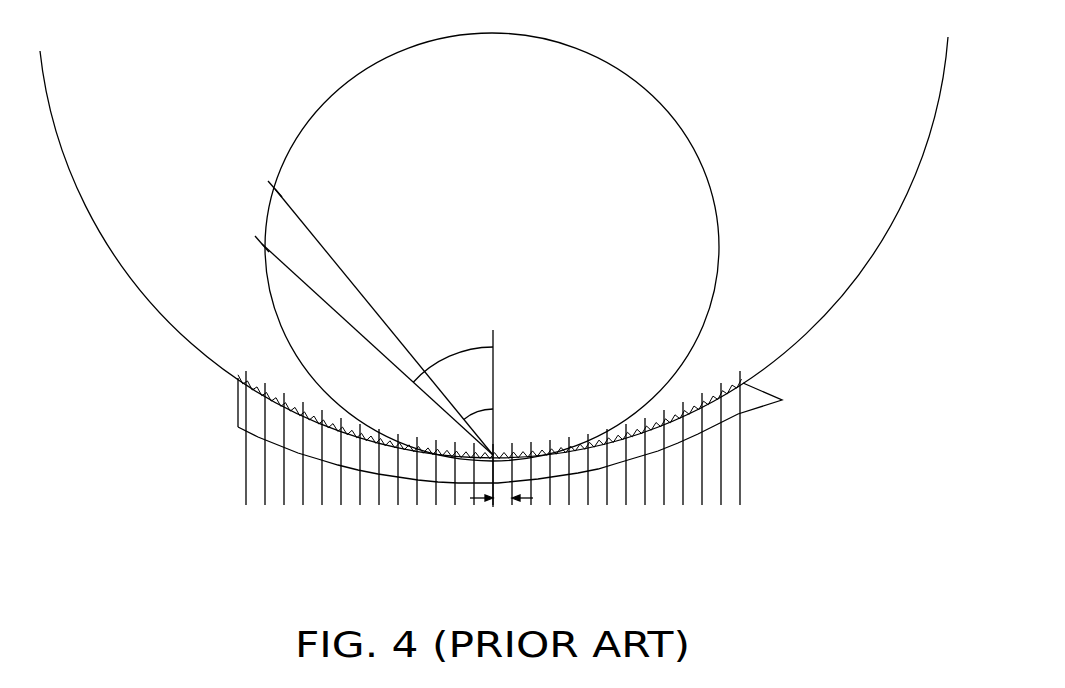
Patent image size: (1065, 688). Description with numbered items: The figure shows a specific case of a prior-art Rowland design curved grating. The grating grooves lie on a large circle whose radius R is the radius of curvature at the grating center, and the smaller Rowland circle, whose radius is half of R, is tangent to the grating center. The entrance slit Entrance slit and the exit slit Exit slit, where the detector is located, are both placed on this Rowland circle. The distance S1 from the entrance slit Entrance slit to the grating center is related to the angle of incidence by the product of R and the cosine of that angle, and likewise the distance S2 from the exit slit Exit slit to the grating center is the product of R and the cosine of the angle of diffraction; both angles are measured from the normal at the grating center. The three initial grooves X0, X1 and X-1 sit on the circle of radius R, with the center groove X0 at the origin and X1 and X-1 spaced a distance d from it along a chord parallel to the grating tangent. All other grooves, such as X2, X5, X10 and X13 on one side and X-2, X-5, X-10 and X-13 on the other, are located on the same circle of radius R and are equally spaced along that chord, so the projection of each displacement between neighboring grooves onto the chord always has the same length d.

The radius of curvature at the grating center R is at (490, 33).
The entrance slit Entrance slit is at (230, 172).
The exit slit Exit slit is at (216, 243).
The distance of the entrance slit to the grating center S1 is at (384, 322).
The distance of the detector to the grating center S2 is at (377, 349).
The groove position vector X-13 is at (233, 400).
The groove position vector X-10 is at (303, 429).
The groove position vector X-5 is at (392, 458).
The groove position vector X-2 is at (447, 461).
The initial groove position vector X-1 is at (466, 465).
The initial groove position vector X0 is at (502, 434).
The initial groove position vector X1 is at (521, 435).
The groove position vector X2 is at (539, 472).
The groove position vector X5 is at (606, 468).
The groove position vector X10 is at (688, 432).
The groove position vector X13 is at (745, 402).